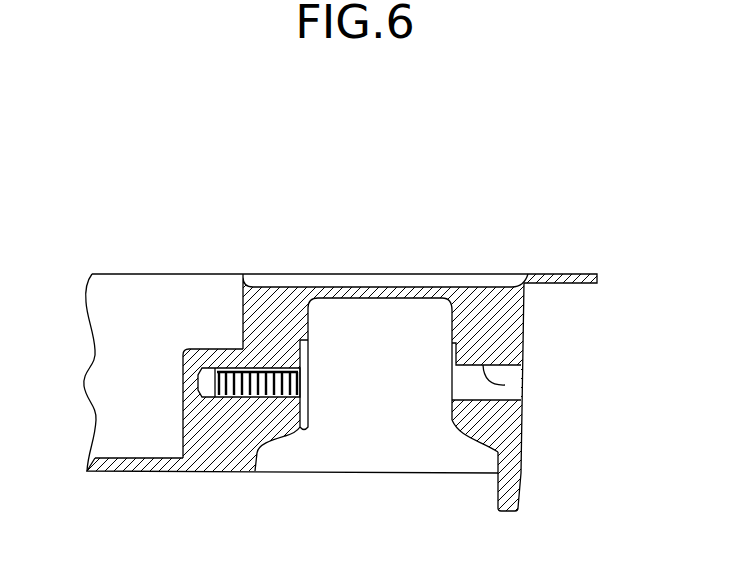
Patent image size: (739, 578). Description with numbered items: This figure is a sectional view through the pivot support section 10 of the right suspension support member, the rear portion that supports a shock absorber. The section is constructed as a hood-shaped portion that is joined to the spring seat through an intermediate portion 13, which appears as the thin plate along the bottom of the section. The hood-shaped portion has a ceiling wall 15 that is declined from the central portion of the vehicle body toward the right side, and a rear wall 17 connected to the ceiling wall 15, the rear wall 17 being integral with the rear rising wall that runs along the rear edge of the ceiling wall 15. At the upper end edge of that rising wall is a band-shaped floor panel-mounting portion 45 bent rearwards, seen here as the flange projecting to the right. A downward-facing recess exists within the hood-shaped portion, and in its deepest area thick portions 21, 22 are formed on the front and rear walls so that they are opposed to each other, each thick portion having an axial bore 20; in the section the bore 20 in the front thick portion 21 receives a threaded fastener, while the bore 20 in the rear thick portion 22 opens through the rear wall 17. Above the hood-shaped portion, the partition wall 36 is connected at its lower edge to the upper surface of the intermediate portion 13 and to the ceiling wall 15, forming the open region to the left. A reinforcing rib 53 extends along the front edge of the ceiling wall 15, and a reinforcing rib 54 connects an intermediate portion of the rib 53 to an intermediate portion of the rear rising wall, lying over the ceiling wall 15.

The pivot support section 10 is at (527, 437).
The intermediate portion 13 is at (123, 458).
The ceiling wall 15 is at (423, 320).
The rear wall 17 is at (510, 483).
The axial bore 20 is at (280, 387).
The thick portion 21 is at (280, 423).
The thick portion 22 is at (473, 423).
The partition wall 36 is at (123, 312).
The floor panel-mounting portion 45 is at (563, 273).
The reinforcing rib 53 is at (247, 275).
The reinforcing rib 54 is at (352, 278).